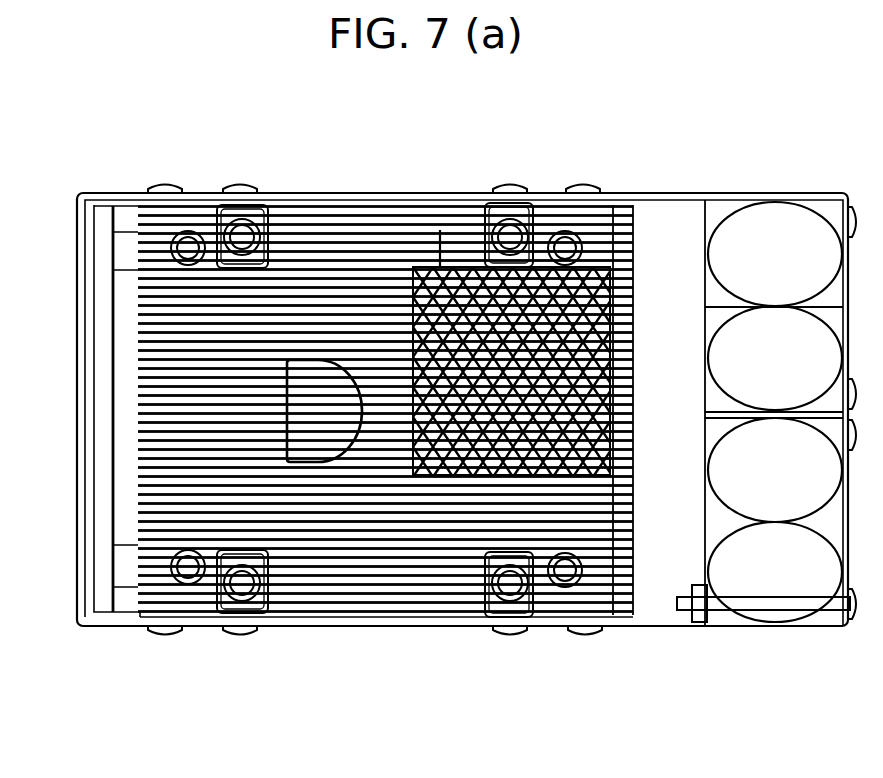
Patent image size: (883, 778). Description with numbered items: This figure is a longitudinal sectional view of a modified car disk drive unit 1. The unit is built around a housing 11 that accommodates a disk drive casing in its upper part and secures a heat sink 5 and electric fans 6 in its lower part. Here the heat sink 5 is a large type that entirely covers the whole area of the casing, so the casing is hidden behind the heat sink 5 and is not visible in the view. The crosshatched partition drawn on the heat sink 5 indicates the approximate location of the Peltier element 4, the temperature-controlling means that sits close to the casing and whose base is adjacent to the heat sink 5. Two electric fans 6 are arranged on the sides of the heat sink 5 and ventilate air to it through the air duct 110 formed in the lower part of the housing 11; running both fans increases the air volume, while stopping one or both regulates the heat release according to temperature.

The car disk drive unit 1 is at (352, 180).
The Peltier element 4 is at (555, 250).
The heat sink 5 is at (327, 325).
The electric fan 6 is at (773, 180).
The housing 11 is at (663, 627).
The air duct 110 is at (660, 578).